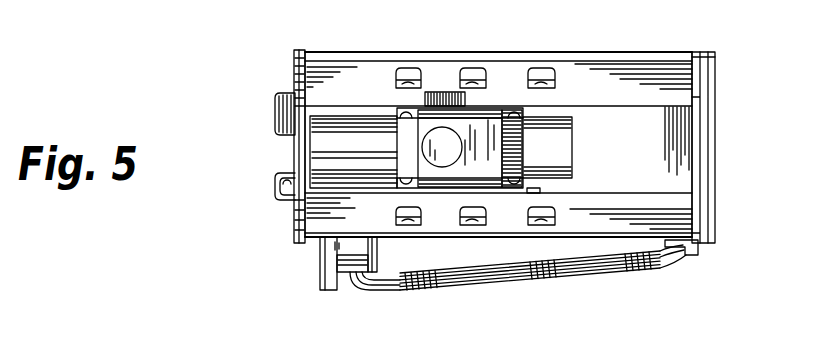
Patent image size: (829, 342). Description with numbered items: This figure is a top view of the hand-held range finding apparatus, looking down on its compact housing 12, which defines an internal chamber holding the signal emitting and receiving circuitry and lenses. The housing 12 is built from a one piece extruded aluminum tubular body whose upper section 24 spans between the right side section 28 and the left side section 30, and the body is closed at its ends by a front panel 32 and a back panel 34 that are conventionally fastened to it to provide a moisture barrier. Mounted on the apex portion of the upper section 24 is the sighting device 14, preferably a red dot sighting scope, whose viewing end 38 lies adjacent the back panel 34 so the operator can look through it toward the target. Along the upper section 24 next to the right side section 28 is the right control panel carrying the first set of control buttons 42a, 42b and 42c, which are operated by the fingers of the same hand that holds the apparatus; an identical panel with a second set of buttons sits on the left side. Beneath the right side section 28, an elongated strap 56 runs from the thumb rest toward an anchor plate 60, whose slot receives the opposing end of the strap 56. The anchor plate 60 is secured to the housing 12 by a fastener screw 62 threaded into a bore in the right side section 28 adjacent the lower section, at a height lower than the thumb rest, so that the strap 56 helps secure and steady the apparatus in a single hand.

The housing 12 is at (680, 133).
The sighting device 14 is at (349, 121).
The upper section 24 is at (655, 113).
The right side section 28 is at (487, 242).
The left side section 30 is at (545, 53).
The front panel 32 is at (715, 157).
The back panel 34 is at (295, 159).
The viewing end 38 is at (320, 138).
The control button 42a is at (403, 228).
The control button 42b is at (465, 228).
The control button 42c is at (540, 227).
The elongated strap 56 is at (593, 265).
The anchor plate 60 is at (670, 264).
The fastener screw 62 is at (690, 257).